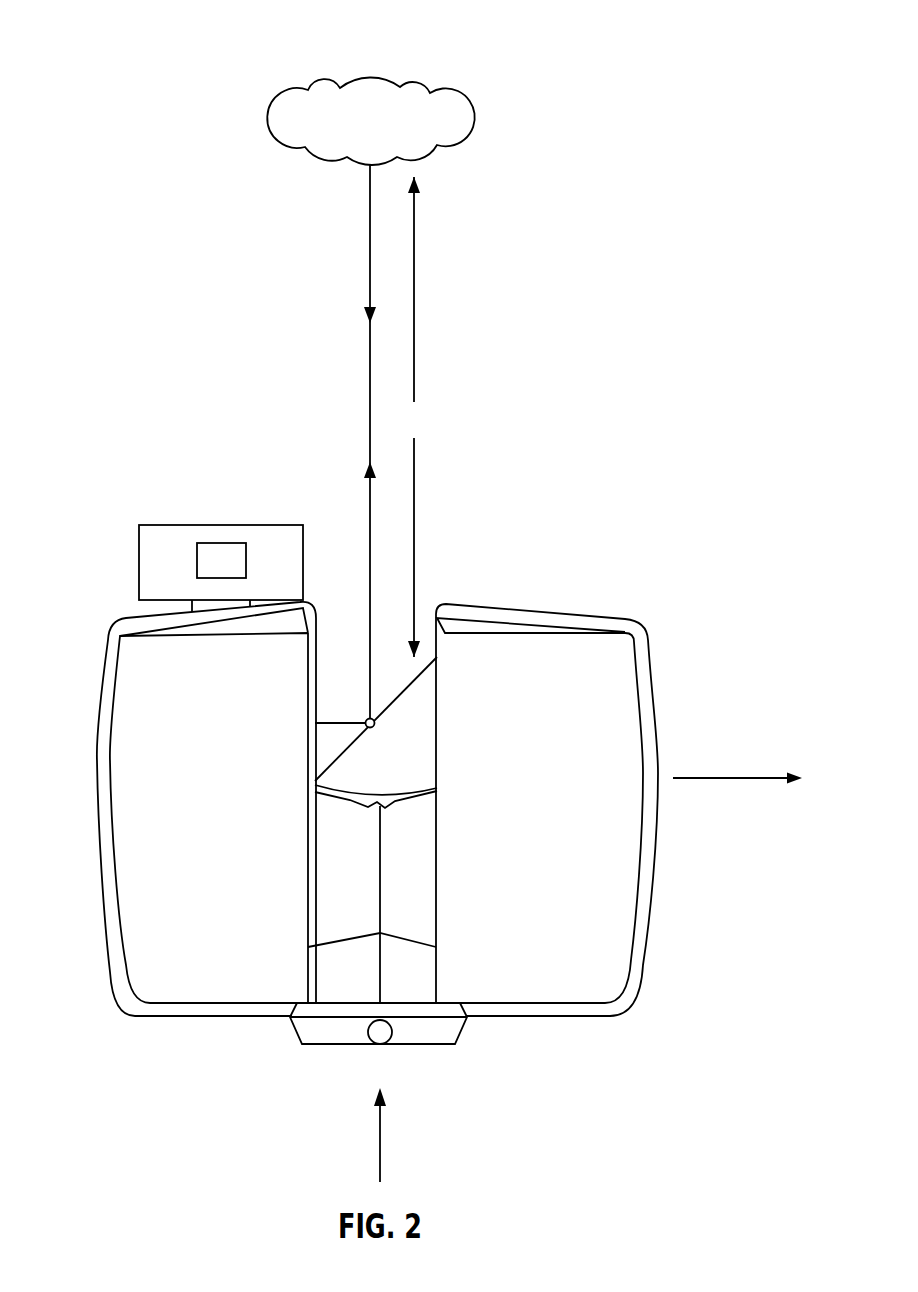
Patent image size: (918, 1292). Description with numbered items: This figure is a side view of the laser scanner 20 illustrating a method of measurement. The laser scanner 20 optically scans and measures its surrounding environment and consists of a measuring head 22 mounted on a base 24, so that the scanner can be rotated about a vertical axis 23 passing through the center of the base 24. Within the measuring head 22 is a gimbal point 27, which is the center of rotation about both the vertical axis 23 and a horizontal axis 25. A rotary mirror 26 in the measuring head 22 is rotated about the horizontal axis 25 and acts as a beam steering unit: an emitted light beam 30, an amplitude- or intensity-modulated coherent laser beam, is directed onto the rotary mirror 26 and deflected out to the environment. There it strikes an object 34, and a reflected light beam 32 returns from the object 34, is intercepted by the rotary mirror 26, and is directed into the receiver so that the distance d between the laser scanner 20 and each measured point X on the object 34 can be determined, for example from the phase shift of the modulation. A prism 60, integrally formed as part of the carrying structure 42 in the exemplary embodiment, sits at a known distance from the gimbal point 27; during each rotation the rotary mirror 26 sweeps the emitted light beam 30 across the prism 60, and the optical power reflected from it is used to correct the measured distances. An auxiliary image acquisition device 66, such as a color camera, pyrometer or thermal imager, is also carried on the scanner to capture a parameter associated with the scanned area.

The laser scanner 20 is at (105, 34).
The measuring head 22 is at (644, 557).
The vertical axis 23 is at (382, 1138).
The base 24 is at (297, 1032).
The horizontal axis 25 is at (709, 777).
The rotary mirror 26 is at (358, 741).
The gimbal point 27 is at (376, 719).
The emitted light beam 30 is at (368, 506).
The reflected light beam 32 is at (368, 268).
The object 34 is at (421, 83).
The carrying structure 42 is at (590, 1047).
The prism 60 is at (392, 804).
The auxiliary image acquisition device 66 is at (158, 501).